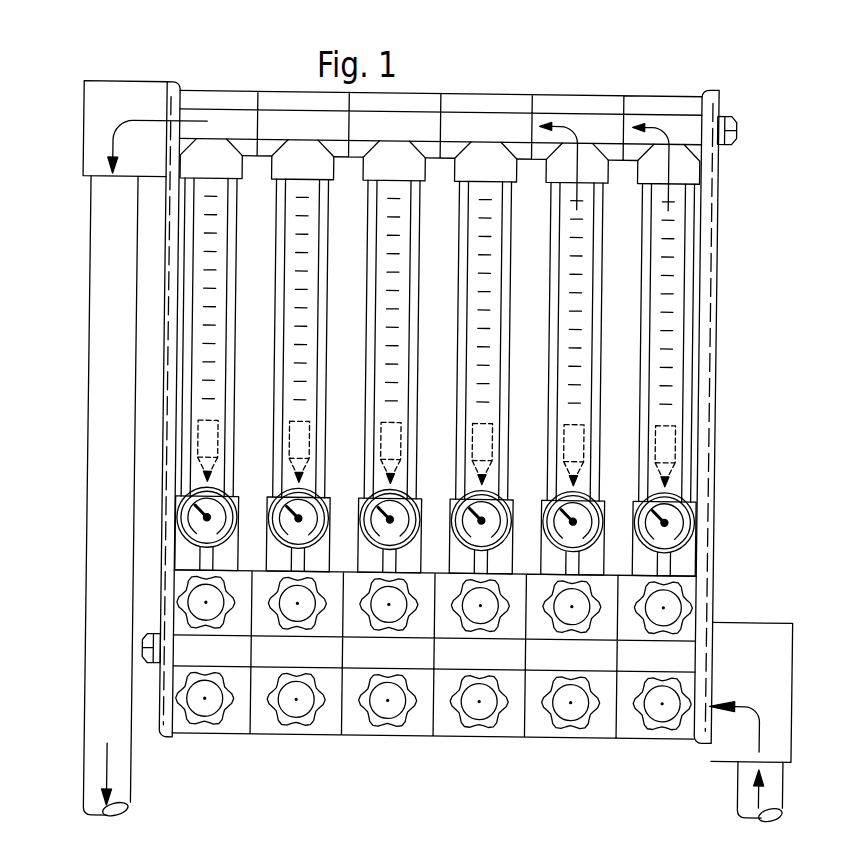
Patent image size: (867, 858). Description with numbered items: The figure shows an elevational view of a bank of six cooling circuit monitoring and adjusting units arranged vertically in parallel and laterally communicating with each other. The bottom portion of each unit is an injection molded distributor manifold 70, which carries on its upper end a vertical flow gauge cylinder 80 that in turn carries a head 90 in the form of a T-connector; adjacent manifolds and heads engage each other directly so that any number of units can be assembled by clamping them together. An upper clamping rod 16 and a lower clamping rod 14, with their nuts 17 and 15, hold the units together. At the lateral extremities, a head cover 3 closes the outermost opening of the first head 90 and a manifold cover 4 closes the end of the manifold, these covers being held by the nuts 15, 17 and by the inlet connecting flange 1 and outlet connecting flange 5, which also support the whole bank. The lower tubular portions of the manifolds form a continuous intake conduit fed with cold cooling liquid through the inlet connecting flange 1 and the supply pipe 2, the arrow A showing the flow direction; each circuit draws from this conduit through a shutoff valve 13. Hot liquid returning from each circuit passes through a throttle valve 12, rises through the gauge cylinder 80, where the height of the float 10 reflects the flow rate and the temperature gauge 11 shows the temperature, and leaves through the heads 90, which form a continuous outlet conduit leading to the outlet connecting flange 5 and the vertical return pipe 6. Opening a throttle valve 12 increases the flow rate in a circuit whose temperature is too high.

The inlet connecting flange 1 is at (417, 431).
The supply pipe 2 is at (742, 782).
The head cover 3 is at (701, 478).
The manifold cover 4 is at (172, 407).
The outlet connecting flange 5 is at (96, 119).
The return pipe 6 is at (108, 474).
The float 10 is at (585, 433).
The temperature gauge 11 is at (596, 498).
The throttle valve 12 is at (592, 610).
The shutoff valve 13 is at (586, 726).
The lower clamping rod 14 is at (675, 657).
The nut 15 is at (146, 654).
The upper clamping rod 16 is at (538, 119).
The nut 17 is at (723, 111).
The distributor manifold 70 is at (540, 686).
The flow gauge cylinder 80 is at (577, 323).
The head 90 is at (599, 105).